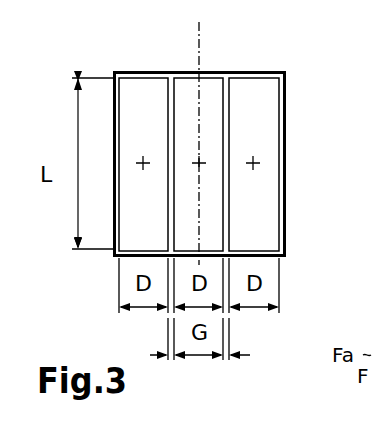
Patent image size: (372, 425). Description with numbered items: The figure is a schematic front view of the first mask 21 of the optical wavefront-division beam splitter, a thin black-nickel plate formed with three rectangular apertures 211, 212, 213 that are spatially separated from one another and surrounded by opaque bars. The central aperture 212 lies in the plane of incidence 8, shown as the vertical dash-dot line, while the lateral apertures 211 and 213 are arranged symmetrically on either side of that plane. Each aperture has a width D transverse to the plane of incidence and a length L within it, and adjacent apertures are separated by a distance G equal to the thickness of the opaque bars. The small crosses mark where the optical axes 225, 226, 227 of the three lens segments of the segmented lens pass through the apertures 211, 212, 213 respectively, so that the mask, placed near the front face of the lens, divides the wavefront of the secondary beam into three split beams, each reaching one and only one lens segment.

The first mask 21 is at (285, 193).
The lateral aperture 211 is at (141, 88).
The central aperture 212 is at (185, 88).
The lateral aperture 213 is at (251, 87).
The plane of incidence 8 is at (201, 40).
The optical axis 225 is at (143, 160).
The optical axis 226 is at (199, 160).
The optical axis 227 is at (254, 162).